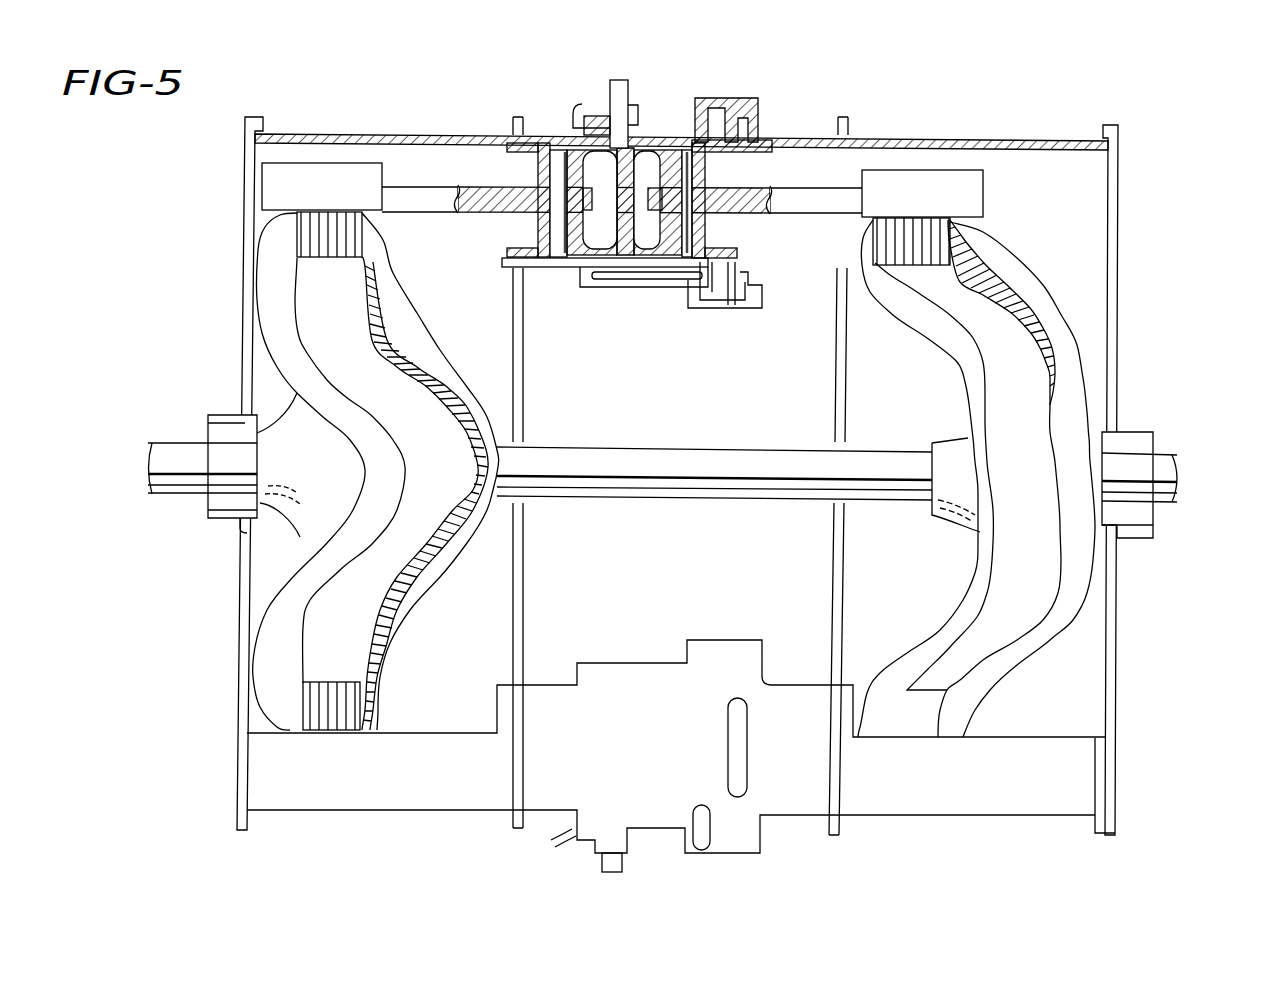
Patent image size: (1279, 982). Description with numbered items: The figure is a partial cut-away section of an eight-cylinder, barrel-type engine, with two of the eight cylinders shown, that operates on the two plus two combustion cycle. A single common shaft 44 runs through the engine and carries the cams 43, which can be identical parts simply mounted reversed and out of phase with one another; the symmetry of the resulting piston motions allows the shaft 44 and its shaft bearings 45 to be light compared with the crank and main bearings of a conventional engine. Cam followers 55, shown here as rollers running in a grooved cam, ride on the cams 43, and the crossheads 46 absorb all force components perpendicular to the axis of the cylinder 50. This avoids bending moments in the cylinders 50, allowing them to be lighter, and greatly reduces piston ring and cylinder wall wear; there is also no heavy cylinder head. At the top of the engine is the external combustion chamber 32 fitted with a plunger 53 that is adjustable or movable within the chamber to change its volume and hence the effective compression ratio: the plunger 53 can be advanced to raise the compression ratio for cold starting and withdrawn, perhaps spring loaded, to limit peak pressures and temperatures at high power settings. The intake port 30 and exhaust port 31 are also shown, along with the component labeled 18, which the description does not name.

The mounting clip 18 is at (578, 112).
The intake port 30 is at (733, 277).
The exhaust port 31 is at (710, 293).
The external combustion chamber 32 is at (625, 127).
The cams 43 is at (398, 620).
The common shaft 44 is at (697, 455).
The shaft bearings 45 is at (235, 432).
The crossheads 46 is at (338, 172).
The cylinder 50 is at (775, 138).
The plunger 53 is at (624, 92).
The cam followers 55 is at (345, 232).